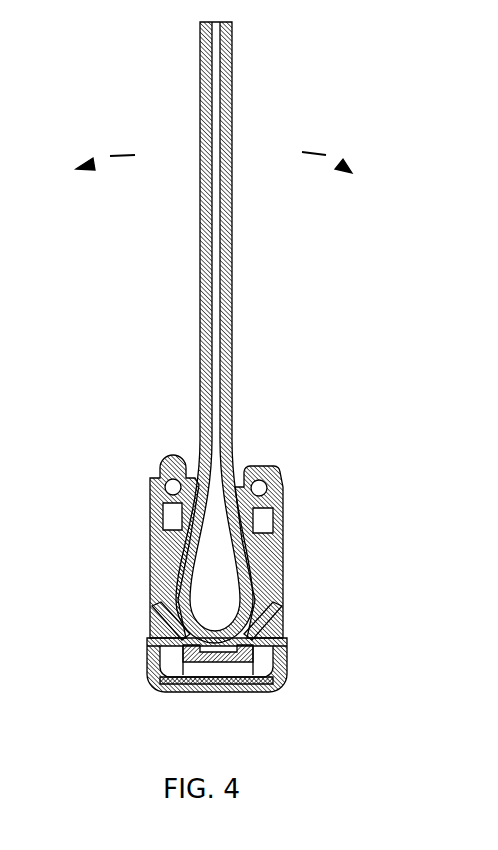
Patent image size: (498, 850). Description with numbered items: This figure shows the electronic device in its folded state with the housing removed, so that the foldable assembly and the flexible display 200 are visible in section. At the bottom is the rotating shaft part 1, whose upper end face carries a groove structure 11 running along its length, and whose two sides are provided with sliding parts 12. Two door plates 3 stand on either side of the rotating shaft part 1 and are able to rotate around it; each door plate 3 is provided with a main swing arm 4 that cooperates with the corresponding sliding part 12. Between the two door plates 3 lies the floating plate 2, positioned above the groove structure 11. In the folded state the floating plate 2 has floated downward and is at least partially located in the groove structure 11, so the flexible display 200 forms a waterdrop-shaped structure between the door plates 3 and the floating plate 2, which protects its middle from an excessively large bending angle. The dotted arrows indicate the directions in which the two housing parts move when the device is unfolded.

The flexible display 200 is at (227, 367).
The rotating shaft part 1 is at (215, 685).
The groove structure 11 is at (245, 660).
The floating plate 2 is at (207, 655).
The door plate 3 is at (177, 551).
The main swing arm 4 is at (169, 618).
The sliding part 12 is at (150, 648).